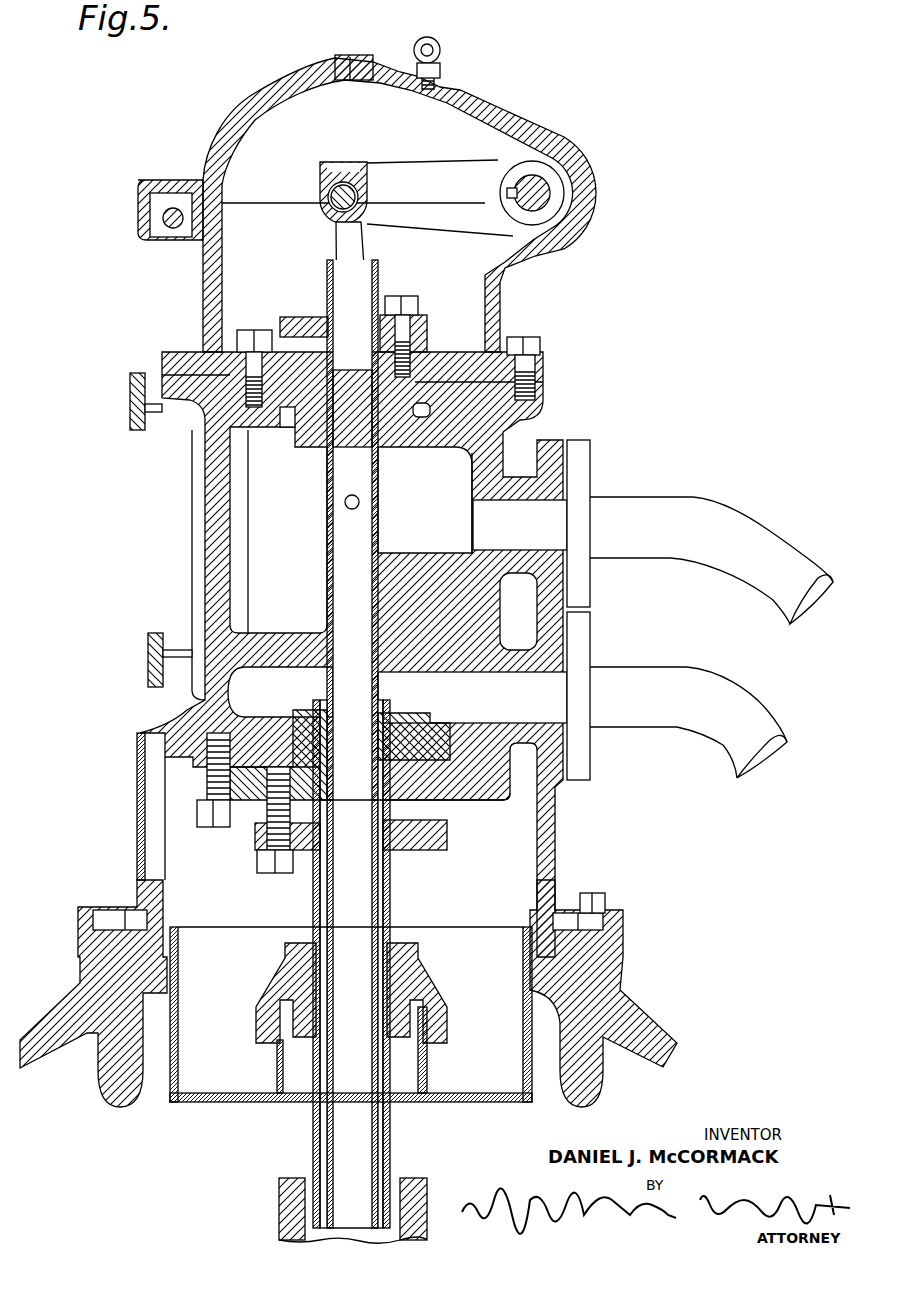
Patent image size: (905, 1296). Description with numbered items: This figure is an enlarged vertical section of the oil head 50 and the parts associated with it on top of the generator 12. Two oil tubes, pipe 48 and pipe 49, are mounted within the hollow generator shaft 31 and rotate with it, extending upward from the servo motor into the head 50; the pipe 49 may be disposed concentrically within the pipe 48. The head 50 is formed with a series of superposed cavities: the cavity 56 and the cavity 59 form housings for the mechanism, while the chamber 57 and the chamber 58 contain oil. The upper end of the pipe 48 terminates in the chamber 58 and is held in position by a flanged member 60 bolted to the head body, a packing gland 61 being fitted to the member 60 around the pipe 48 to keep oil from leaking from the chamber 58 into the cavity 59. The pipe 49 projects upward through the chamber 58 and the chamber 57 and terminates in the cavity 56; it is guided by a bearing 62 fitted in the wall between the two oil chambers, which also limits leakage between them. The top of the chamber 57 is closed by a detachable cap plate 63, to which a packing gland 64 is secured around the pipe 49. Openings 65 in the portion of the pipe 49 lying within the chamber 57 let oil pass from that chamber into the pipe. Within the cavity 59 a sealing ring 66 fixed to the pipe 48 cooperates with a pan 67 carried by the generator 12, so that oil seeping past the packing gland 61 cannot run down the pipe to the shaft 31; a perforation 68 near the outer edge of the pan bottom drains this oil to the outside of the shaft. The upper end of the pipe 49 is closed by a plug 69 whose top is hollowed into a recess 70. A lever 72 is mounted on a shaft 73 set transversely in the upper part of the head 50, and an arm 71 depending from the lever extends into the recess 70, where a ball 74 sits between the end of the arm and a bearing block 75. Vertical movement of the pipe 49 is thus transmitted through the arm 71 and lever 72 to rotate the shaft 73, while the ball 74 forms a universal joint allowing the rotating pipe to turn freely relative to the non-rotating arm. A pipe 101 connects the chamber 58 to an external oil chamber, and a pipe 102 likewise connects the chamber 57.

The generator 12 is at (652, 1038).
The generator shaft 31 is at (285, 1215).
The pipe 48 is at (392, 891).
The pipe 49 is at (352, 744).
The head 50 is at (200, 531).
The cavity 56 is at (367, 194).
The chamber 57 is at (351, 530).
The chamber 58 is at (280, 692).
The cavity 59 is at (181, 806).
The member 60 is at (473, 792).
The packing gland 61 is at (400, 732).
The bearing 62 is at (405, 622).
The cap plate 63 is at (438, 366).
The packing gland 64 is at (404, 338).
The openings 65 is at (360, 504).
The sealing ring 66 is at (447, 1002).
The pan 67 is at (255, 1102).
The perforation 68 is at (183, 1102).
The plug 69 is at (358, 432).
The recess 70 is at (326, 318).
The arm 71 is at (357, 258).
The lever 72 is at (465, 198).
The shaft 73 is at (535, 180).
The ball 74 is at (340, 332).
The bearing block 75 is at (328, 408).
The pipe 101 is at (582, 696).
The pipe 102 is at (653, 532).